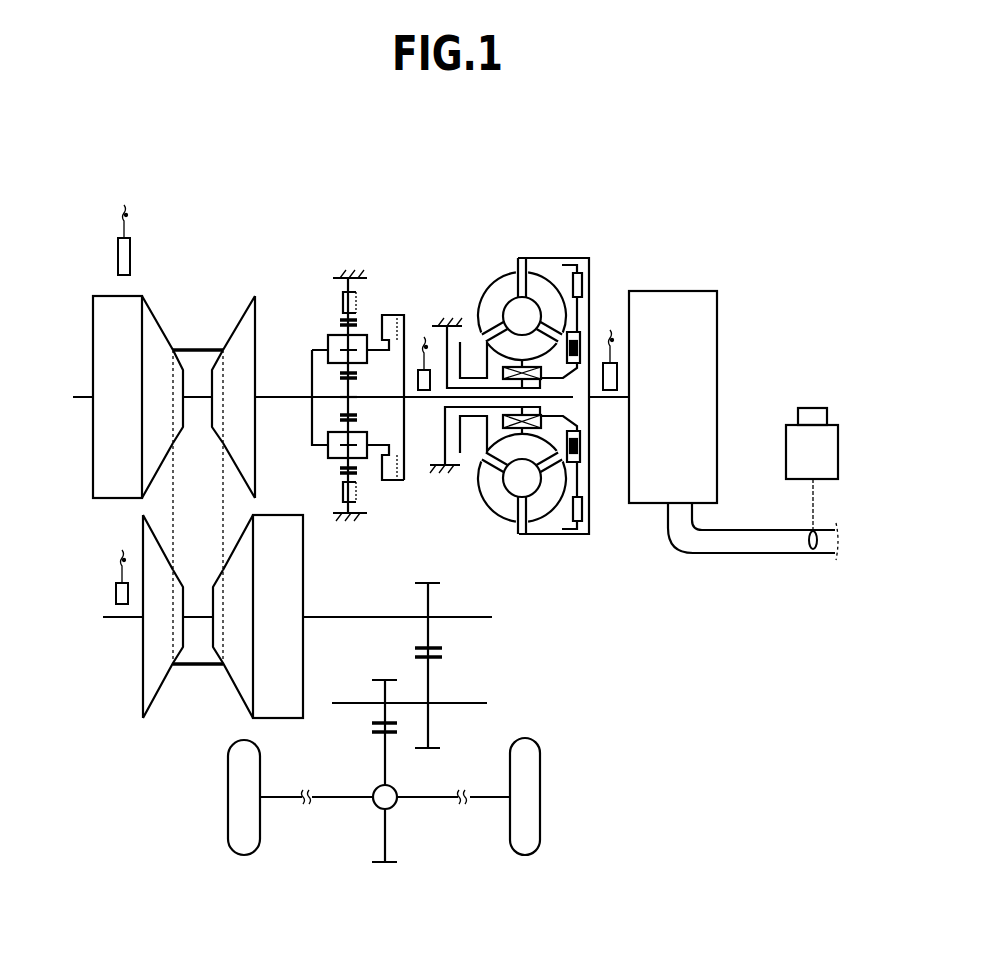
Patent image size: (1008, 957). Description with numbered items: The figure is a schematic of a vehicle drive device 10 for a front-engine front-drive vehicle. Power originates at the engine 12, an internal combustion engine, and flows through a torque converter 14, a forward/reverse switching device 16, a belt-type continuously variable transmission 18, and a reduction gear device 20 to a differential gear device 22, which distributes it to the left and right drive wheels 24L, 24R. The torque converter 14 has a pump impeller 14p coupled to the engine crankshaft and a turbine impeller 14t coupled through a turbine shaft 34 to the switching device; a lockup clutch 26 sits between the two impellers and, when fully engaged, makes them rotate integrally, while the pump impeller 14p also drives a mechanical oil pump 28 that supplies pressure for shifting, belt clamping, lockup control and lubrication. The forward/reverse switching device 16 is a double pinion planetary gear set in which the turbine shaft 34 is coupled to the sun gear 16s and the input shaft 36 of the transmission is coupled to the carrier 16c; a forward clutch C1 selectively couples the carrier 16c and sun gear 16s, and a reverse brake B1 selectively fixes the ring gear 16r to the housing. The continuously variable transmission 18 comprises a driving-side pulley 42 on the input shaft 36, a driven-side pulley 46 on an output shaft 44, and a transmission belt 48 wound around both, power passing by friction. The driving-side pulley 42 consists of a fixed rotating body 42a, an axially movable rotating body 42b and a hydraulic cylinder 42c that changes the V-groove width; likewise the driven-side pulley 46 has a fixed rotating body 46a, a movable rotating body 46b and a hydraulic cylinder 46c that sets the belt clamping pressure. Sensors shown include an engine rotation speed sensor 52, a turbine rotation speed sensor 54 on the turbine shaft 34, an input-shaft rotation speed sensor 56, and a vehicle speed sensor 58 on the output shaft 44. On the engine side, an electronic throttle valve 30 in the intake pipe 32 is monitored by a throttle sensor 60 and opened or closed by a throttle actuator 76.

The vehicle drive device 10 is at (810, 237).
The engine 12 is at (708, 355).
The torque converter 14 is at (524, 240).
The pump impeller 14p is at (495, 503).
The turbine impeller 14t is at (538, 508).
The forward/reverse switching device 16 is at (296, 264).
The carrier 16c is at (322, 340).
The sun gear 16s is at (340, 402).
The ring gear 16r is at (343, 483).
The belt-type continuously variable transmission 18 is at (175, 747).
The reduction gear device 20 is at (497, 668).
The differential gear device 22 is at (380, 799).
The left drive wheel 24L is at (243, 827).
The right drive wheel 24R is at (533, 810).
The lockup clutch 26 is at (580, 282).
The mechanical oil pump 28 is at (466, 347).
The electronic throttle valve 30 is at (817, 543).
The intake pipe 32 is at (743, 542).
The turbine shaft 34 is at (413, 400).
The input shaft 36 is at (277, 392).
The driving-side pulley 42 is at (118, 511).
The driving-side fixed rotating body 42a is at (243, 327).
The driving-side movable rotating body 42b is at (152, 327).
The driving-side hydraulic cylinder 42c is at (103, 316).
The output shaft 44 is at (363, 620).
The driven-side pulley 46 is at (133, 725).
The driven-side fixed rotating body 46a is at (153, 675).
The driven-side movable rotating body 46b is at (242, 672).
The driven-side hydraulic cylinder 46c is at (300, 597).
The transmission belt 48 is at (200, 348).
The engine rotation speed sensor 52 is at (605, 363).
The turbine rotation speed sensor 54 is at (416, 368).
The input-shaft rotation speed sensor 56 is at (125, 250).
The vehicle speed sensor 58 is at (116, 593).
The throttle sensor 60 is at (812, 415).
The throttle actuator 76 is at (795, 453).
The reverse brake B1 is at (335, 300).
The forward clutch C1 is at (388, 384).